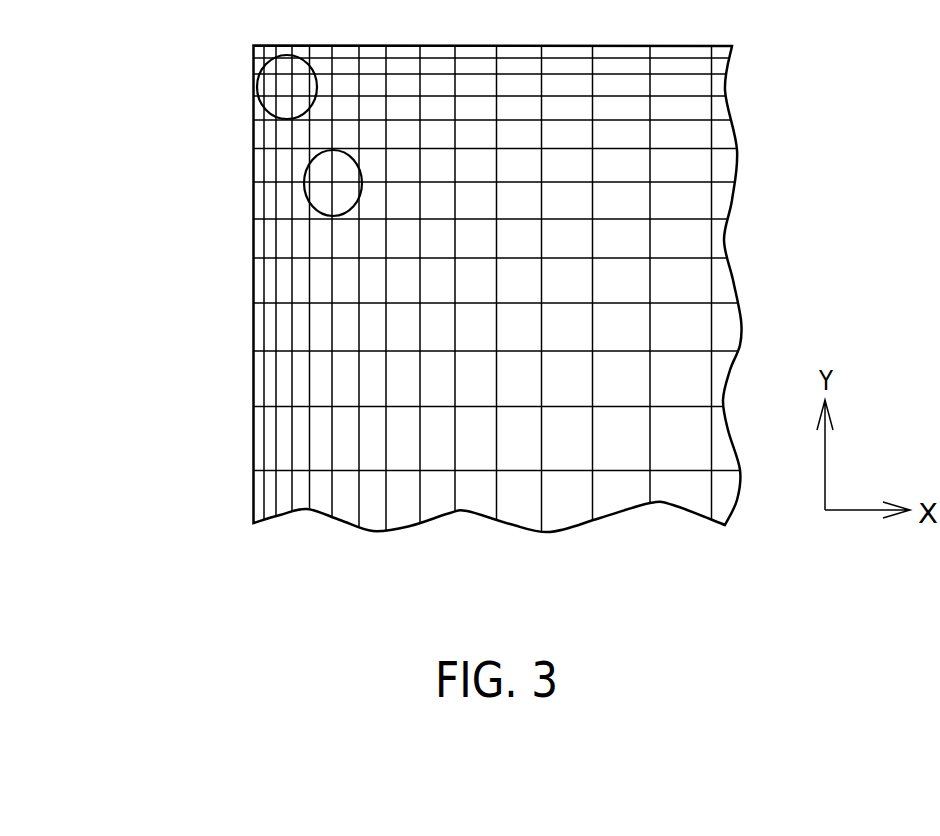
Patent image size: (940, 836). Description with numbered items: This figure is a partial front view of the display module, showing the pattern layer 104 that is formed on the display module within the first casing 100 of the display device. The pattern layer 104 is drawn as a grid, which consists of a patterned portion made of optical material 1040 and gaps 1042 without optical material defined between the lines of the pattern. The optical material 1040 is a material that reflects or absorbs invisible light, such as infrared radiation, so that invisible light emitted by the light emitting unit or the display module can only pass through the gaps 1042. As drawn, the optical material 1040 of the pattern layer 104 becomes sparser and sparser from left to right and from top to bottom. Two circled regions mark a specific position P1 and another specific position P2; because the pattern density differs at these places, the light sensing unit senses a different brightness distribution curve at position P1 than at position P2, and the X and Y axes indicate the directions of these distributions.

The first casing 100 is at (252, 382).
The pattern layer 104 is at (566, 267).
The optical material 1040 is at (678, 75).
The gaps 1042 is at (538, 290).
The specific position P1 is at (258, 83).
The another specific position P2 is at (307, 173).